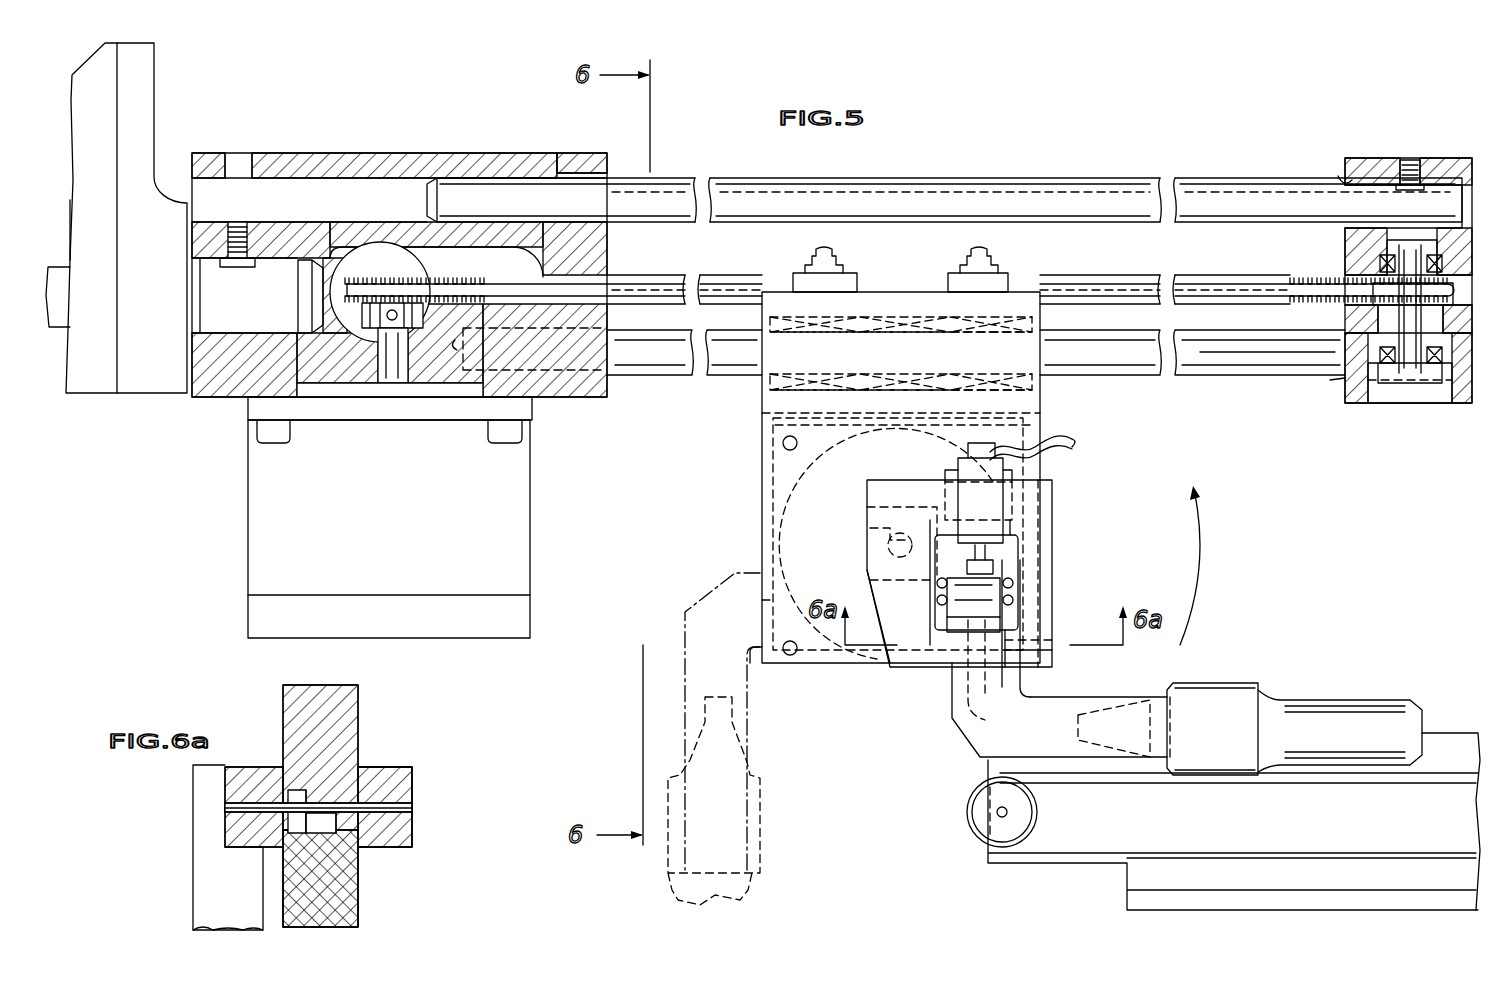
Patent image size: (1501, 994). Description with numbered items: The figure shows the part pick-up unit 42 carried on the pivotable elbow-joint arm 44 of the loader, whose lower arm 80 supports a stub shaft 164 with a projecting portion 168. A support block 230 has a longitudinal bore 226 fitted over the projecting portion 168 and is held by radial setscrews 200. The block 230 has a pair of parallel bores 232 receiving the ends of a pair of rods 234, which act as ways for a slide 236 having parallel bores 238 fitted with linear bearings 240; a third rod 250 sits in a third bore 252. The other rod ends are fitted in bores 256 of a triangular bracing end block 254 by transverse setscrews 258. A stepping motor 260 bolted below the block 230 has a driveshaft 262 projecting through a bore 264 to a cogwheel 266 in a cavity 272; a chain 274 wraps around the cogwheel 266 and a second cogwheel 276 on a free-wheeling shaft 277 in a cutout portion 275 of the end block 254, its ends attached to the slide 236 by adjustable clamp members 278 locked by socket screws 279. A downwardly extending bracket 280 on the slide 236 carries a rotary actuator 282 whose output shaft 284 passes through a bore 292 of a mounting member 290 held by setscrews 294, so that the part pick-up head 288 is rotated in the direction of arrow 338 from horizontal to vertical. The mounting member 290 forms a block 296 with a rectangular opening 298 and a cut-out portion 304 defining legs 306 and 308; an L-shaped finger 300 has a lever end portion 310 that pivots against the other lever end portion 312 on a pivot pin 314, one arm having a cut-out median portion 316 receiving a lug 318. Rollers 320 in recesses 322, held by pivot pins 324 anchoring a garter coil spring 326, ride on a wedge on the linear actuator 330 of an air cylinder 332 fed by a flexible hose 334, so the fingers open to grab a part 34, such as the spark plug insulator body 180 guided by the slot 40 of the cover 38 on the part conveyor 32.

In FIG. 5, the elbow-joint arm 44 is at (105, 89).
In FIG. 5, the lower arm 80 is at (73, 238).
In FIG. 5, the stub shaft 164 is at (70, 340).
In FIG. 5, the setscrews 200 is at (254, 226).
In FIG. 5, the projecting portion 168 is at (272, 272).
In FIG. 5, the longitudinal bore 226 is at (224, 328).
In FIG. 5, the support block 230 is at (585, 153).
In FIG. 5, the parallel bores 232 is at (564, 374).
In FIG. 5, the third bore 252 is at (466, 175).
In FIG. 5, the cavity 272 is at (458, 246).
In FIG. 5, the chain 274 is at (466, 282).
In FIG. 5, the cogwheel 266 is at (348, 332).
In FIG. 5, the driveshaft 262 is at (398, 385).
In FIG. 5, the bore 264 is at (382, 388).
In FIG. 5, the stepping motor 260 is at (391, 638).
In FIG. 5, the third rod 250 is at (915, 190).
In FIG. 5, the longitudinal bores 238 is at (1042, 358).
In FIG. 5, the rods 234 is at (1248, 376).
In FIG. 5, the slide 236 is at (760, 425).
In FIG. 5, the linear bearings 240 is at (993, 332).
In FIG. 5, the clamp member 278 is at (1014, 276).
In FIG. 5, the socket screws 279 is at (970, 258).
In FIG. 5, the bracket 280 is at (770, 503).
In FIG. 5, the rotary actuator 282 is at (843, 673).
In FIG. 5, the block 296 is at (1058, 505).
In FIG. 5, the bore 292 is at (880, 511).
In FIG. 5, the setscrews 294 is at (874, 534).
In FIG. 5, the output shaft 284 is at (876, 549).
In FIG. 5, the mounting member 290 is at (878, 576).
In FIG. 6a, the mounting member 290 is at (208, 862).
In FIG. 5, the air cylinder 332 is at (958, 468).
In FIG. 5, the flexible hose 334 is at (1071, 433).
In FIG. 5, the linear actuator 330 is at (1000, 552).
In FIG. 5, the opening 298 is at (1010, 572).
In FIG. 5, the garter coil spring 326 is at (949, 576).
In FIG. 5, the pivot pin 324 is at (948, 592).
In FIG. 5, the part pick-up head 288 is at (1025, 621).
In FIG. 5, the leg 306 is at (1030, 620).
In FIG. 5, the pivot pin 314 is at (1025, 635).
In FIG. 6a, the pivot pin 314 is at (412, 808).
In FIG. 5, the roller 320 is at (1000, 684).
In FIG. 5, the recess 322 is at (1000, 720).
In FIG. 5, the lever end portion 312 is at (935, 650).
In FIG. 6a, the lever end portion 312 is at (346, 728).
In FIG. 5, the leg 308 is at (894, 664).
In FIG. 6a, the leg 308 is at (238, 848).
In FIG. 5, the cut-out portion 304 is at (950, 687).
In FIG. 5, the finger 300 is at (1090, 720).
In FIG. 6a, the finger 300 is at (412, 835).
In FIG. 5, the part 34 is at (1257, 683).
In FIG. 5, the spark plug insulator body 180 is at (1336, 708).
In FIG. 5, the cover 38 is at (1451, 801).
In FIG. 5, the slot 40 is at (1451, 745).
In FIG. 5, the part conveyor 32 is at (1073, 856).
In FIG. 5, the arrow 338 is at (1210, 570).
In FIG. 5, the part pick-up unit 42 is at (568, 677).
In FIG. 5, the bracing end block 254 is at (1374, 158).
In FIG. 5, the transverse setscrews 258 is at (1414, 160).
In FIG. 5, the bores 256 is at (1338, 178).
In FIG. 5, the cogwheel 276 is at (1428, 306).
In FIG. 5, the cutout portion 275 is at (1355, 318).
In FIG. 5, the free-wheeling shaft 277 is at (1403, 400).
In FIG. 6a, the lever end portion 310 is at (356, 912).
In FIG. 6a, the cut-out median portion 316 is at (339, 834).
In FIG. 6a, the lug 318 is at (312, 835).